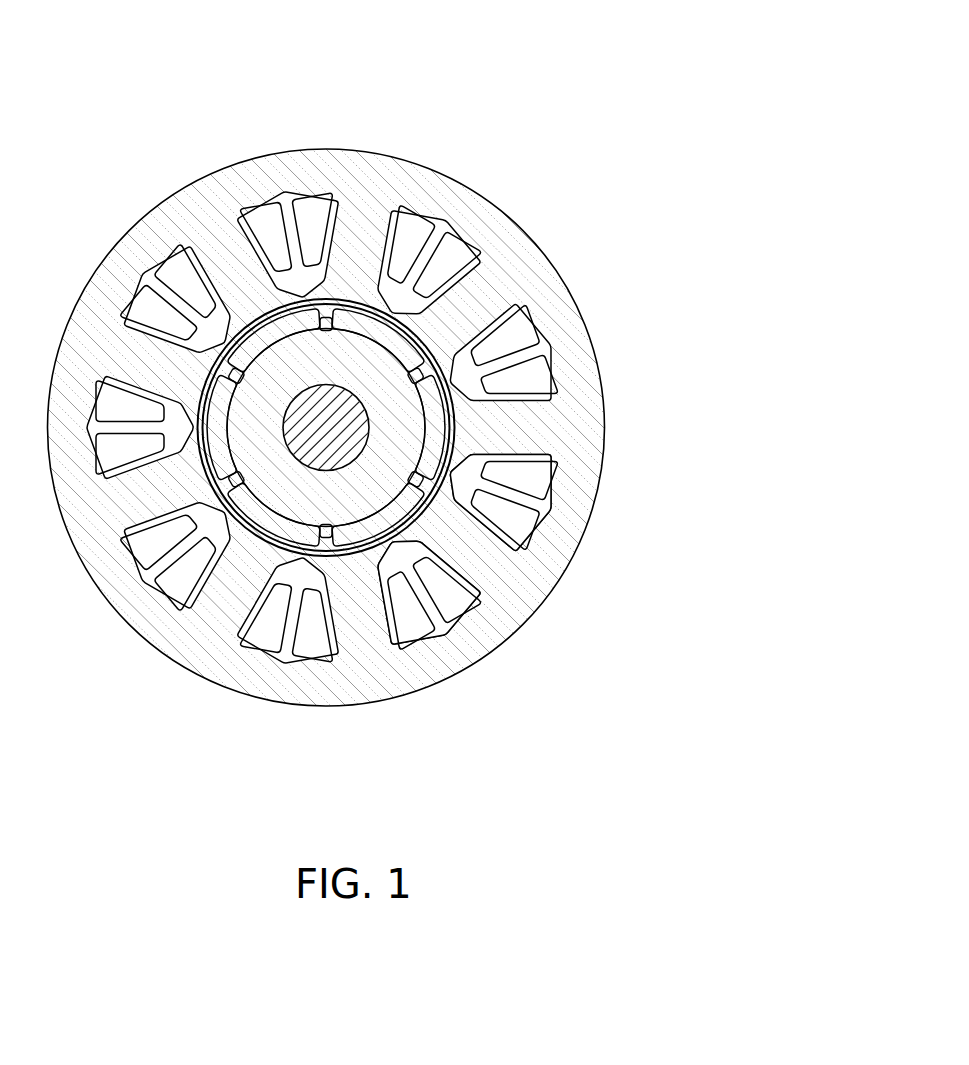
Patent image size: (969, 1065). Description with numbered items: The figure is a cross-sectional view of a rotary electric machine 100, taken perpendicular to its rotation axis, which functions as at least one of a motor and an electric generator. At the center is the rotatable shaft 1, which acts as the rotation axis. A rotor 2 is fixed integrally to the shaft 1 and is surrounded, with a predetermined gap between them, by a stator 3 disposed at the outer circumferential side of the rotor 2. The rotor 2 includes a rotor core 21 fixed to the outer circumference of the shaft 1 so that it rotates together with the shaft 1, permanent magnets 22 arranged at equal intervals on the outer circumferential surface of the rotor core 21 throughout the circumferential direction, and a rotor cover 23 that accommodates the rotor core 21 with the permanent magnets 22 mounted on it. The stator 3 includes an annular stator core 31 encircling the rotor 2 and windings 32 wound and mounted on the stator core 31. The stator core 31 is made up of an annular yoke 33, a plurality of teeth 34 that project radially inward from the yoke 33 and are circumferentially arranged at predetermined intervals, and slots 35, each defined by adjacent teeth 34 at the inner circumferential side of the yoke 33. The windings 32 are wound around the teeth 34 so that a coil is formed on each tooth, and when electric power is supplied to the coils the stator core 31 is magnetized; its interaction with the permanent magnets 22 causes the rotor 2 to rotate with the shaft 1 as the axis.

The rotary electric machine 100 is at (598, 99).
The shaft 1 is at (333, 432).
The rotor 2 is at (295, 306).
The rotor core 21 is at (283, 370).
The permanent magnets 22 is at (287, 330).
The rotor cover 23 is at (305, 298).
The stator 3 is at (379, 467).
The stator core 31 is at (590, 455).
The windings 32 is at (563, 547).
The yoke 33 is at (508, 525).
The teeth 34 is at (470, 548).
The slots 35 is at (440, 627).